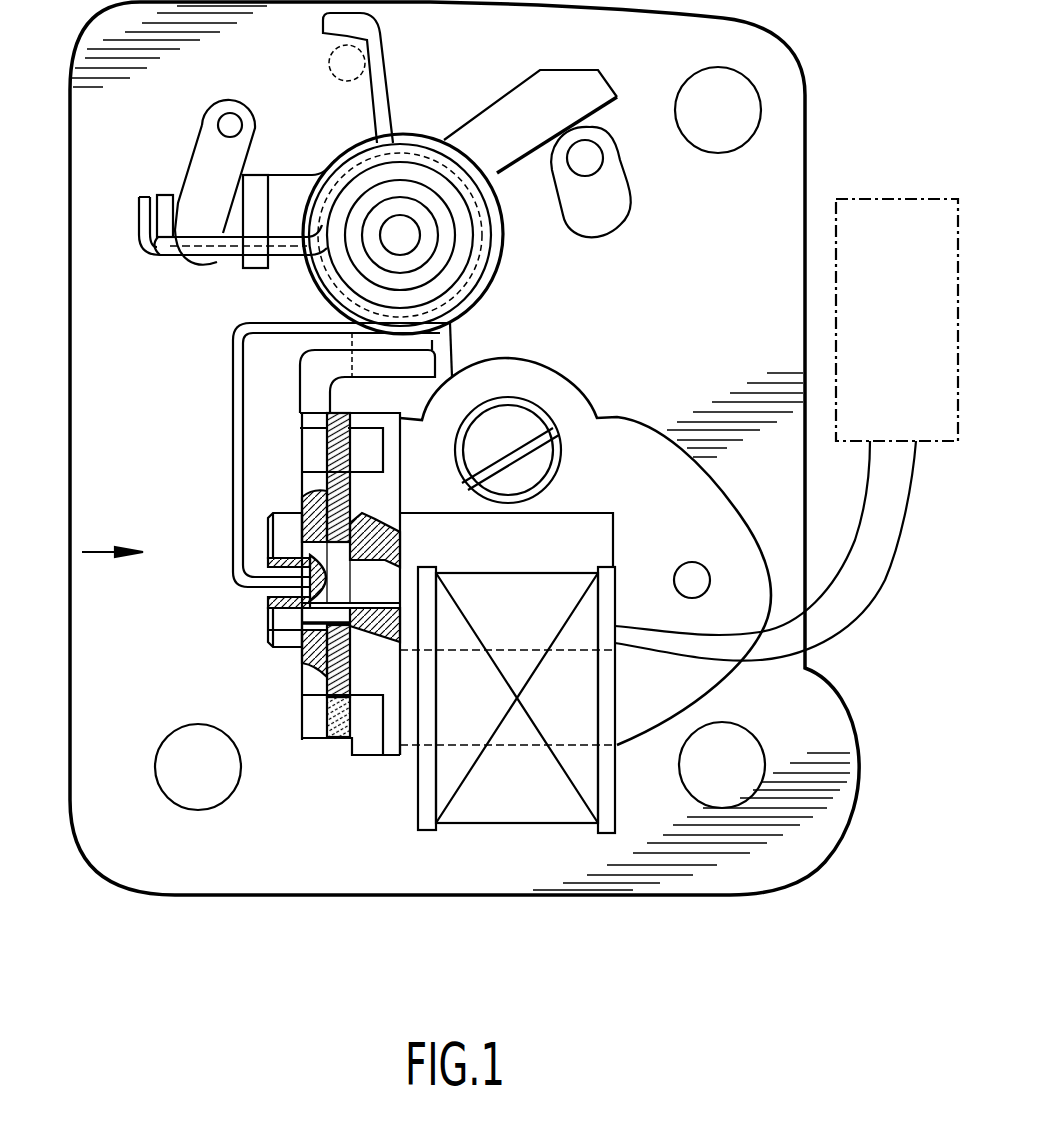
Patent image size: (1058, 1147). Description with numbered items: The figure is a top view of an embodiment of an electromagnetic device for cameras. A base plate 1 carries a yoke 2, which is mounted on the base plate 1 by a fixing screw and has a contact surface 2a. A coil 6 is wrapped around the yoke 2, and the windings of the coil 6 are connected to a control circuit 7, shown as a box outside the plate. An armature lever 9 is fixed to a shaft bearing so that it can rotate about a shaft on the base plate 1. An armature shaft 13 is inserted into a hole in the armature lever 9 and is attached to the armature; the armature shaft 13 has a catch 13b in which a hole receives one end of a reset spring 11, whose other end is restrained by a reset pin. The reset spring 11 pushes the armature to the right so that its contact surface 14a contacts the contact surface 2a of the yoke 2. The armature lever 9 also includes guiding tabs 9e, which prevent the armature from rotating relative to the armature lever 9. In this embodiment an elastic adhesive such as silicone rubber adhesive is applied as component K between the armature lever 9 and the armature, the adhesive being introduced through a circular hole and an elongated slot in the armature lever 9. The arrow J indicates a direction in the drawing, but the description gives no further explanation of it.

The base plate 1 is at (582, 896).
The yoke 2 is at (645, 421).
The contact surface 2a is at (442, 478).
The coil 6 is at (428, 829).
The control circuit 7 is at (900, 199).
The armature lever 9 is at (307, 677).
The guiding tabs 9e is at (367, 441).
The reset spring 11 is at (235, 398).
The armature shaft 13 is at (377, 575).
The catch 13b is at (293, 647).
The contact surface 14a is at (397, 710).
The elastic adhesive K is at (333, 414).
The direction arrow J is at (112, 537).